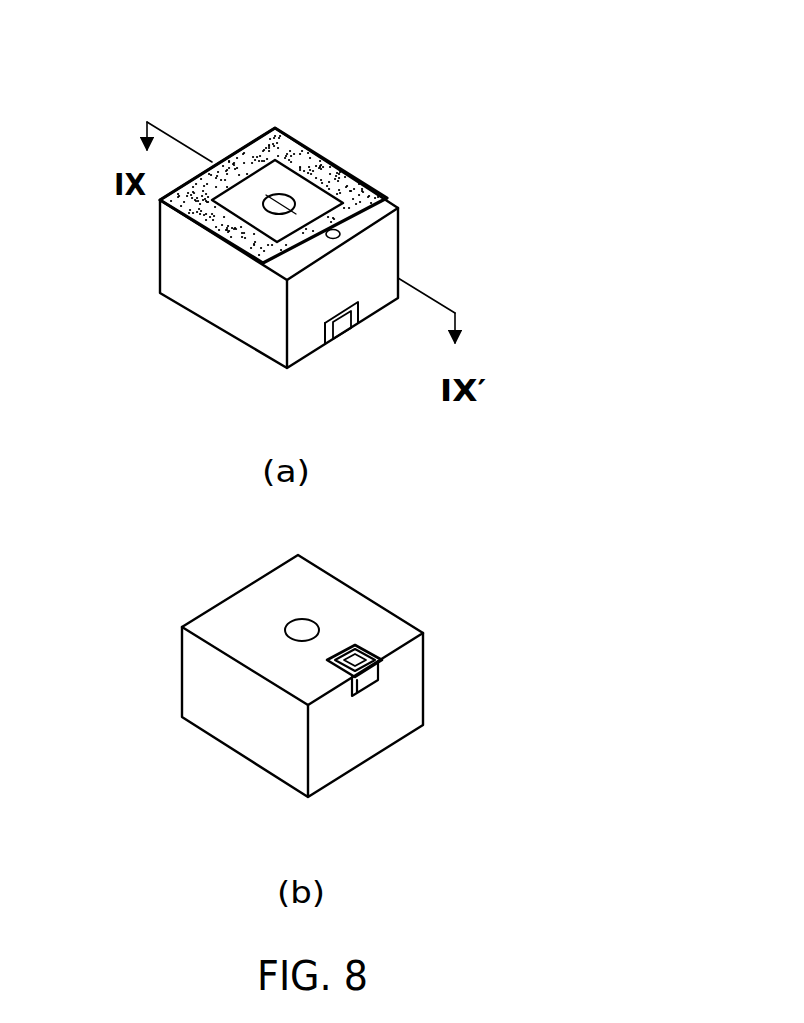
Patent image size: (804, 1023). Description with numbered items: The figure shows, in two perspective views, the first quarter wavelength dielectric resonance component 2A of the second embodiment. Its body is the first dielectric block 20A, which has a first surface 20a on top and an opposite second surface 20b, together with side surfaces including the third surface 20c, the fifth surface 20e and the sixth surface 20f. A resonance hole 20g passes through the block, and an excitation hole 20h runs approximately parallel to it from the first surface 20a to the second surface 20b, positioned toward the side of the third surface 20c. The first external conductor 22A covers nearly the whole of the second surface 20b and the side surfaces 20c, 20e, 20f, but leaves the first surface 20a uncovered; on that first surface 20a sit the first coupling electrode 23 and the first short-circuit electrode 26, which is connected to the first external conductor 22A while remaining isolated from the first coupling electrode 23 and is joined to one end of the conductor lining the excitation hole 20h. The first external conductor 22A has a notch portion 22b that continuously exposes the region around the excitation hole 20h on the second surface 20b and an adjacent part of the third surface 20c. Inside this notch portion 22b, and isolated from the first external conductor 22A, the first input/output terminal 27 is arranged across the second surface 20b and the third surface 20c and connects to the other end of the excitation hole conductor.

The first ¼ wavelength dielectric resonance component 2A is at (406, 92).
The first surface 20a is at (235, 165).
The first dielectric block 20A is at (280, 132).
The first coupling electrode 23 is at (293, 188).
The resonance hole 20g is at (299, 196).
The first short-circuit electrode 26 is at (390, 197).
The excitation hole 20h is at (341, 232).
The third surface 20c is at (386, 250).
The fifth surface 20e is at (160, 278).
The first external conductor 22A is at (200, 300).
The notch portion 22b is at (362, 313).
The first input/output terminal 27 is at (348, 335).
The second surface 20b is at (226, 614).
The sixth surface 20f is at (225, 720).